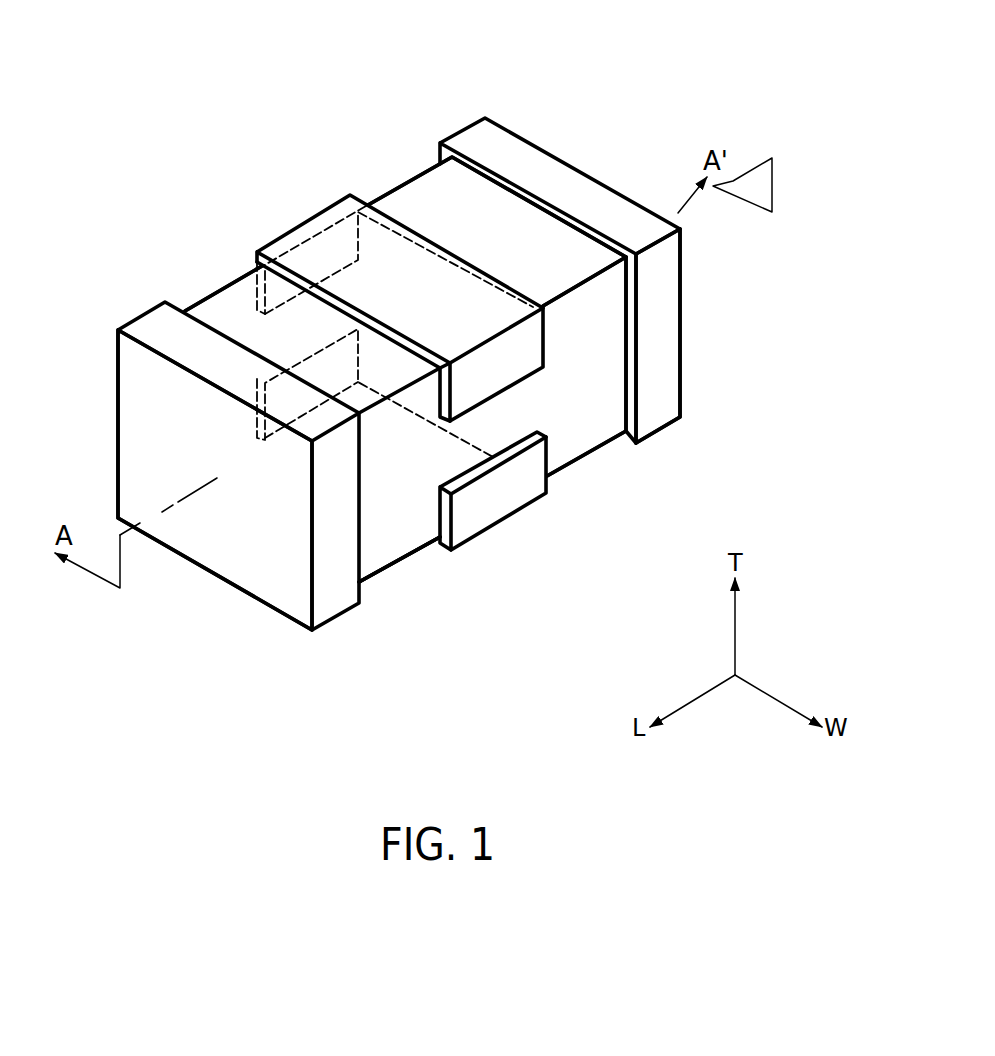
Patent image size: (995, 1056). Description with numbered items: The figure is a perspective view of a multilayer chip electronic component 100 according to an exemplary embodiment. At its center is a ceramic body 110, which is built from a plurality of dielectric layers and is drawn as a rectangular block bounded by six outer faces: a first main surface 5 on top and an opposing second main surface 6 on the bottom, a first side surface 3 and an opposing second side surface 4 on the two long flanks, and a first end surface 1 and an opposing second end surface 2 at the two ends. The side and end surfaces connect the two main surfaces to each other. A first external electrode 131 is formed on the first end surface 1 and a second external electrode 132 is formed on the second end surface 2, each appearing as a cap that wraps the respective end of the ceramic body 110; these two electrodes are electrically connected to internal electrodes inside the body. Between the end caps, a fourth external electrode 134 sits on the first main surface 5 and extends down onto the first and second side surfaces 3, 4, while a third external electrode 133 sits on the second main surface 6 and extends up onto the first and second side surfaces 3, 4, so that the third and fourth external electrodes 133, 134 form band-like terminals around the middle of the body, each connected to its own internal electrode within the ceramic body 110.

The multilayer chip electronic component 100 is at (630, 41).
The ceramic body 110 is at (421, 197).
The first end surface 1 is at (278, 590).
The second end surface 2 is at (684, 346).
The first side surface 3 is at (403, 543).
The second side surface 4 is at (203, 300).
The first main surface 5 is at (240, 310).
The second main surface 6 is at (371, 587).
The first external electrode 131 is at (232, 553).
The second external electrode 132 is at (601, 178).
The third external electrode 133 is at (508, 504).
The fourth external electrode 134 is at (333, 247).